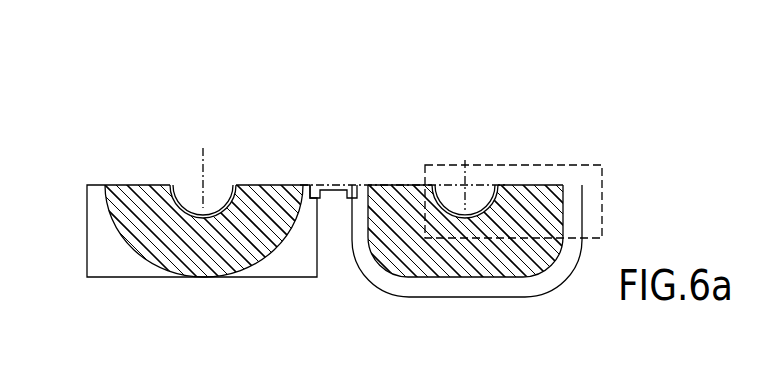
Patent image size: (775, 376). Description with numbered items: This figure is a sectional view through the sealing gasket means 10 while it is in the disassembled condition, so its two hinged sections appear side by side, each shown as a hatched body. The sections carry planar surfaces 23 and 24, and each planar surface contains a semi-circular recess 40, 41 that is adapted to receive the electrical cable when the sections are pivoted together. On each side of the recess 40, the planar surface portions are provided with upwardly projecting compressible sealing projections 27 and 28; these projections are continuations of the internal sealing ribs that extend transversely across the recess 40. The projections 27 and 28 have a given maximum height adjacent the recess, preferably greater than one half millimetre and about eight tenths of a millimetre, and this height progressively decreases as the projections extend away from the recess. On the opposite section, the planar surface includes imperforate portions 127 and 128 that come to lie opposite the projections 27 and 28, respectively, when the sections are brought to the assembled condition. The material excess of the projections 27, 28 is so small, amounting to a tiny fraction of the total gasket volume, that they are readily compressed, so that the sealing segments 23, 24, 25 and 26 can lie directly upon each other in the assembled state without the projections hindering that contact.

The sealing means 10 is at (272, 277).
The planar surface 23 is at (131, 184).
The planar surface 24 is at (265, 184).
The sealing segment 25 is at (381, 185).
The sealing segment 26 is at (538, 185).
The compressible sealing projection 27 is at (493, 185).
The compressible sealing projection 28 is at (433, 185).
The semi-circular recess 40 is at (477, 190).
The semi-circular recess 41 is at (188, 192).
The imperforate portion 127 is at (162, 184).
The imperforate portion 128 is at (243, 184).